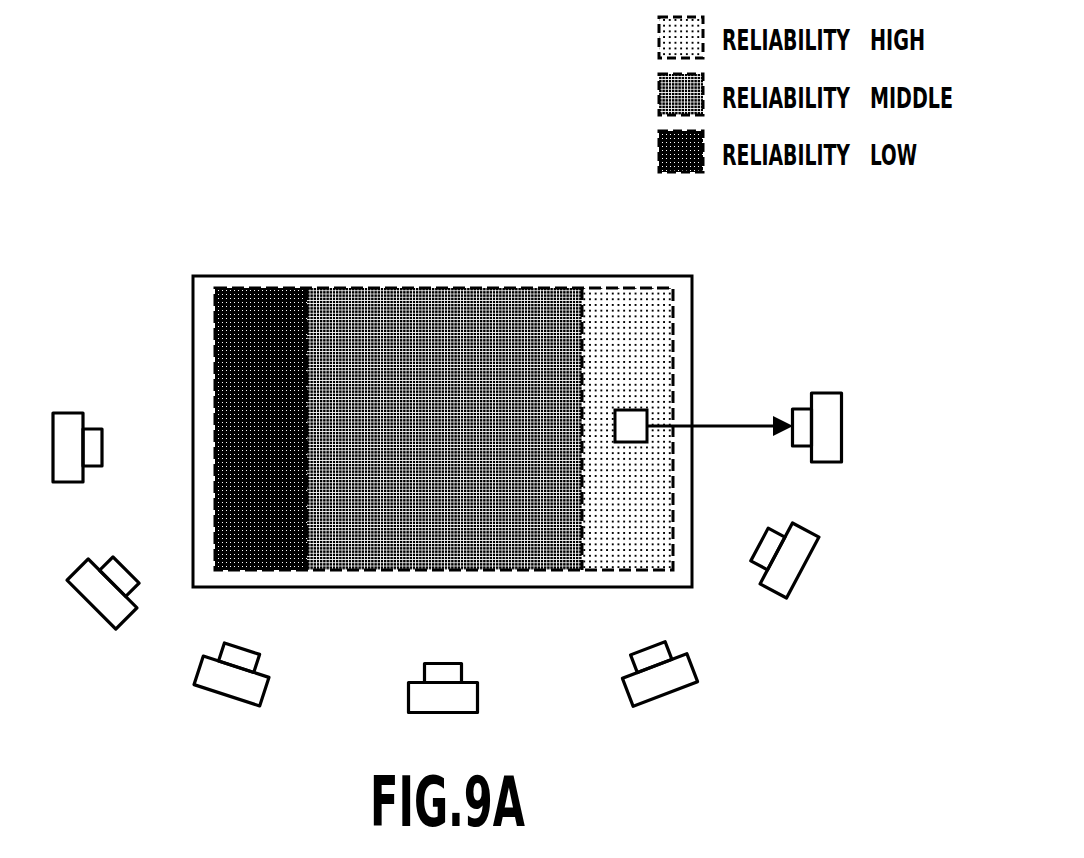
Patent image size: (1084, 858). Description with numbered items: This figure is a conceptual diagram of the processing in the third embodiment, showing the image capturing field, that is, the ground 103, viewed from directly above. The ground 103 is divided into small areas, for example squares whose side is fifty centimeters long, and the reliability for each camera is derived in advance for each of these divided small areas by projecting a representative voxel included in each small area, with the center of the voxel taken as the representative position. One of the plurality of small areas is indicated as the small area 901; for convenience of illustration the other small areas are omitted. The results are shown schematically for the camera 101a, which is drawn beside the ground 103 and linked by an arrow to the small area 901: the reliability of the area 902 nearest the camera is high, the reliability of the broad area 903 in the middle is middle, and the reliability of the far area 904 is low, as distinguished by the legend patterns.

The camera 101a is at (830, 393).
The ground 103 is at (527, 276).
The small area 901 is at (631, 410).
The area of high reliability 902 is at (632, 288).
The area of middle reliability 903 is at (455, 288).
The area of low reliability 904 is at (265, 288).